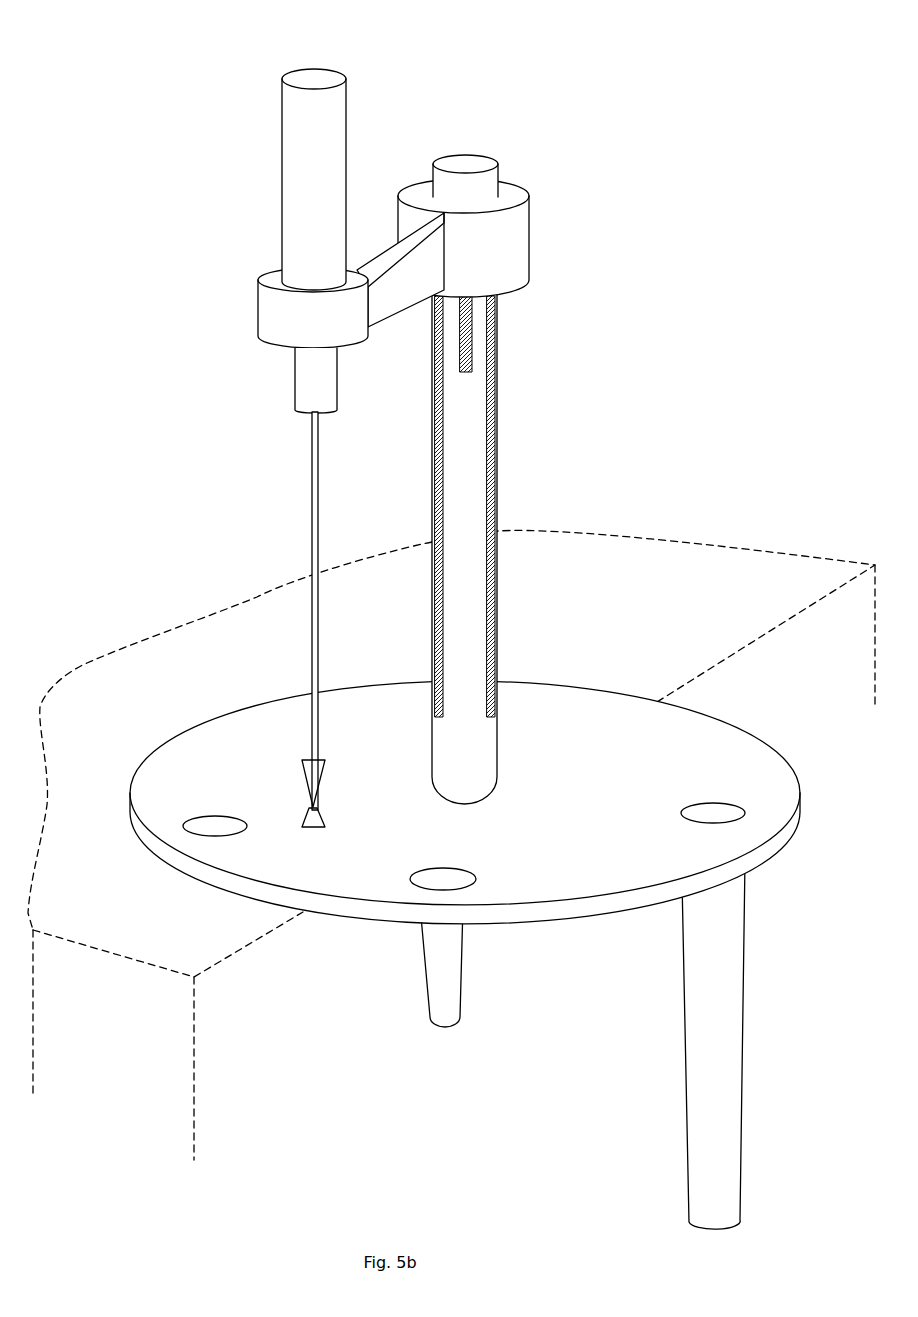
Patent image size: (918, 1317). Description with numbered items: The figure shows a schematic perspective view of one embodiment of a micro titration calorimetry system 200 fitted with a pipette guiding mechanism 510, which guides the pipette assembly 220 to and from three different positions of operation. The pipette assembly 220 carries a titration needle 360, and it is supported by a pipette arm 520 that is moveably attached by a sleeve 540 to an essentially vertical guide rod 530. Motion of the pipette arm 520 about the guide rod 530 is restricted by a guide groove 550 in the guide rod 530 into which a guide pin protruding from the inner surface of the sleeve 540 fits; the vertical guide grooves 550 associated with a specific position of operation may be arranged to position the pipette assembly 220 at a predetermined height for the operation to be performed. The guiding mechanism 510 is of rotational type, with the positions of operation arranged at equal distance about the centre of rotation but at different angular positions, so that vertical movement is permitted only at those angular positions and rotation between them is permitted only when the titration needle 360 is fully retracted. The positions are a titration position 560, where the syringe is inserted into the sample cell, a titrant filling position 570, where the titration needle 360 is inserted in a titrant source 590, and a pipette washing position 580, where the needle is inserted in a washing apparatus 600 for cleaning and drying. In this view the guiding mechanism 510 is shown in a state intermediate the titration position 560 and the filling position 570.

The micro titration calorimetry system 200 is at (229, 448).
The pipette assembly 220 is at (282, 212).
The titration needle 360 is at (311, 539).
The pipette guiding mechanism 510 is at (589, 410).
The pipette arm 520 is at (391, 265).
The guide rod 530 is at (484, 164).
The sleeve 540 is at (518, 242).
The guide groove 550 is at (490, 485).
The titration position 560 is at (217, 836).
The titrant filling position 570 is at (463, 888).
The pipette washing position 580 is at (735, 822).
The titrant source 590 is at (460, 1017).
The washing apparatus 600 is at (690, 1112).